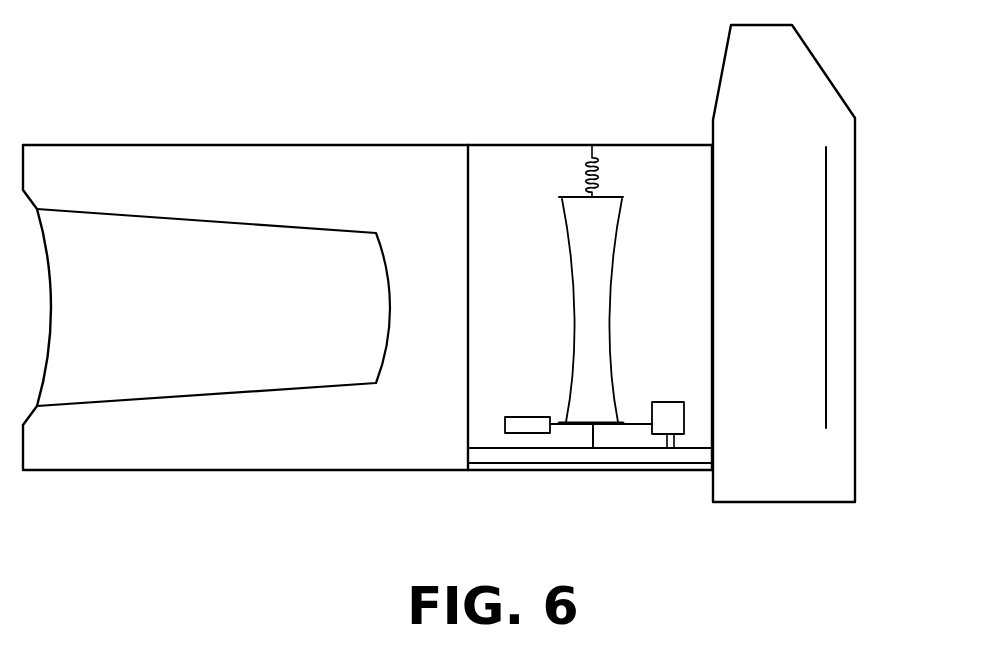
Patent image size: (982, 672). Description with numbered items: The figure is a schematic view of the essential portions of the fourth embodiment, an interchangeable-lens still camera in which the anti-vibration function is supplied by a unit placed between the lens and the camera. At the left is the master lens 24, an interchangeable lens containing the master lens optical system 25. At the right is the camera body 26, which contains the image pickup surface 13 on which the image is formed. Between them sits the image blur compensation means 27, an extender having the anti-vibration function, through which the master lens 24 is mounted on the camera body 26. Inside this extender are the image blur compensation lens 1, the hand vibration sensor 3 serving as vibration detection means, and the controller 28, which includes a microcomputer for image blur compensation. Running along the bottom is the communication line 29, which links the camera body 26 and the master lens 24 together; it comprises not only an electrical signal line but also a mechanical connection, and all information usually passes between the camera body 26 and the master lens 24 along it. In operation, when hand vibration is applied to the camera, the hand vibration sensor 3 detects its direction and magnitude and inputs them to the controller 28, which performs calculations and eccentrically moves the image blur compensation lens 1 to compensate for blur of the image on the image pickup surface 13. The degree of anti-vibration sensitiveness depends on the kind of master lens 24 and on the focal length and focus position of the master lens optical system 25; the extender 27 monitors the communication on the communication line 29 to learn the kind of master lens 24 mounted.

The master lens 24 is at (340, 145).
The master lens optical system 25 is at (330, 228).
The image blur compensation means 27 is at (548, 145).
The image blur compensation lens 1 is at (611, 196).
The hand vibration sensor 3 is at (520, 417).
The controller 28 is at (665, 402).
The communication line 29 is at (605, 466).
The camera body 26 is at (830, 80).
The image pickup surface 13 is at (826, 191).